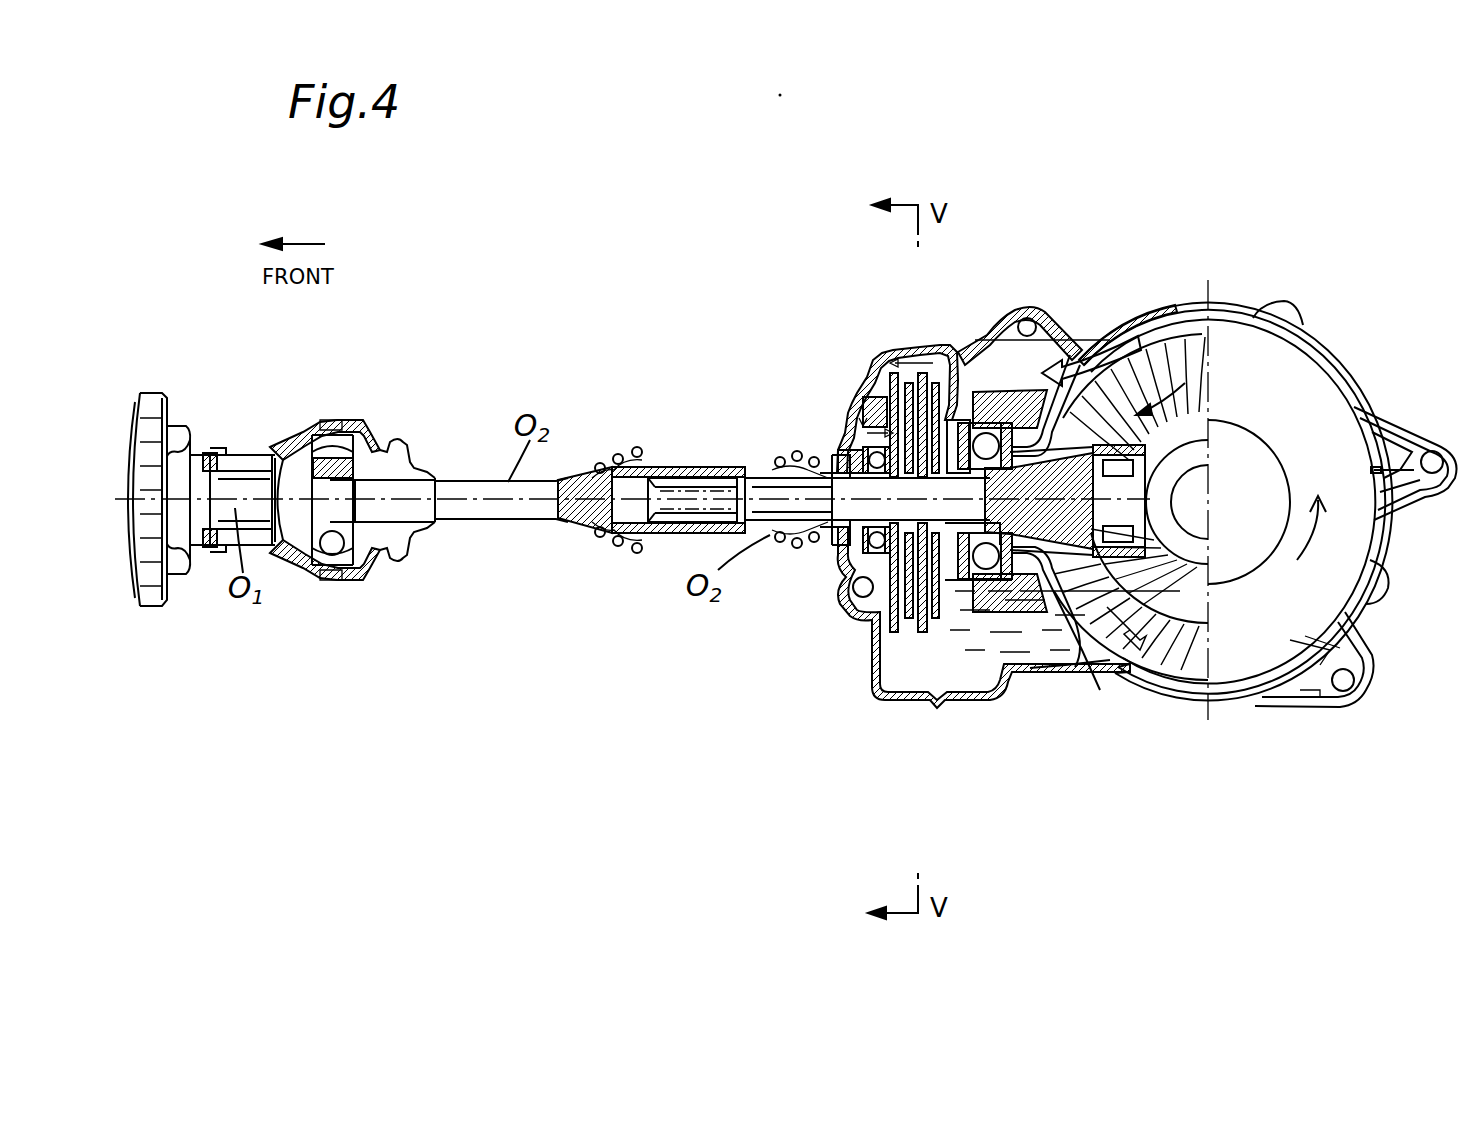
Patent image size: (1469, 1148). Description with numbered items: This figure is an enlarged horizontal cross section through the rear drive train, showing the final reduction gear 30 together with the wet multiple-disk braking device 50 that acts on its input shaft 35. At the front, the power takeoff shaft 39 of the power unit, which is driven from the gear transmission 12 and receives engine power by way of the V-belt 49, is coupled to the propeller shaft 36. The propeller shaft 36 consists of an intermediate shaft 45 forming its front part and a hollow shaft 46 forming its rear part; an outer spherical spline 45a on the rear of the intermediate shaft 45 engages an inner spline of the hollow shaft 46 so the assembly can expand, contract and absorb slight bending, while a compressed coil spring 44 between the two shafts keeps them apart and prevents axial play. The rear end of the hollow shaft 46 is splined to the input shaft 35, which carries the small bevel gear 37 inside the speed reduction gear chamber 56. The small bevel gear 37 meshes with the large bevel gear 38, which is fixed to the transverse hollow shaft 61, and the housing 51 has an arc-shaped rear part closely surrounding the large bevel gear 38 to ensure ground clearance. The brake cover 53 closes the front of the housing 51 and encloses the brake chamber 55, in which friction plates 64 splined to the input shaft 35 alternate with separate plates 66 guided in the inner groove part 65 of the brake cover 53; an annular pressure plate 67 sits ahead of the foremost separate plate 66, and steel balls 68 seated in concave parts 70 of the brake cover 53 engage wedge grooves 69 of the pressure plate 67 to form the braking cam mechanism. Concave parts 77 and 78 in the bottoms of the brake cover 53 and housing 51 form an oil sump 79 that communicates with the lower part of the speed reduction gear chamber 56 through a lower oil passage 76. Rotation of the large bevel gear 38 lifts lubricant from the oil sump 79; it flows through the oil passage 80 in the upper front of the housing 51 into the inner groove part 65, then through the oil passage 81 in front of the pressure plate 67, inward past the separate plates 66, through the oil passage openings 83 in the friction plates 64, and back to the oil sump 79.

The gear transmission 12 is at (157, 586).
The power takeoff shaft 39 is at (235, 488).
The V-belt 49 is at (320, 568).
The propeller shaft 36 is at (590, 600).
The intermediate shaft 45 is at (540, 510).
The hollow shaft 46 is at (687, 543).
The outer spherical spline 45a is at (640, 545).
The compressed coil spring 44 is at (677, 476).
The input shaft 35 is at (845, 540).
The wet multiple-disk braking device 50 is at (941, 550).
The oil passage 81 is at (848, 415).
The annular pressure plate 67 is at (863, 382).
The inner groove part 65 is at (887, 365).
The oil passage openings 83 is at (941, 355).
The friction plates 64 is at (924, 608).
The separate plates 66 is at (938, 600).
The concave parts 70 is at (842, 585).
The steel ball 68 is at (858, 600).
The wedge grooves 69 is at (868, 622).
The brake cover 53 is at (954, 672).
The concave part 77 is at (912, 702).
The concave part 78 is at (959, 738).
The oil sump 79 is at (931, 759).
The brake chamber 55 is at (1040, 676).
The oil passage 80 is at (1005, 380).
The final reduction gear 30 is at (1237, 470).
The large bevel gear 38 is at (1190, 335).
The housing 51 is at (1232, 700).
The speed reduction gear chamber 56 is at (1150, 698).
The hollow shaft 61 is at (1198, 548).
The small bevel gear 37 is at (1085, 628).
The lower oil passage 76 is at (1048, 695).